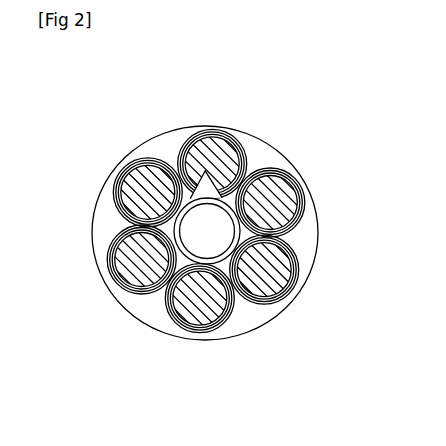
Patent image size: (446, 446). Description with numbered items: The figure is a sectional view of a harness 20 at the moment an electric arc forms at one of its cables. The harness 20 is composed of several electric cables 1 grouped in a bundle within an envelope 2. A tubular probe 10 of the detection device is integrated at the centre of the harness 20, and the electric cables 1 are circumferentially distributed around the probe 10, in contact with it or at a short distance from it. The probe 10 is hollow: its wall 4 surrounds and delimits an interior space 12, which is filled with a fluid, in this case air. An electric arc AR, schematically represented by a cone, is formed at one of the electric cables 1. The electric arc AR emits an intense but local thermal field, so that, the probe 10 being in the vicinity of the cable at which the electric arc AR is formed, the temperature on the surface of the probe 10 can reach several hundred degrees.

The electric cable 1 is at (300, 177).
The envelope 2 is at (231, 128).
The wall 4 is at (170, 288).
The tubular probe 10 is at (241, 244).
The interior space 12 is at (203, 230).
The harness 20 is at (261, 134).
The electric arc AR is at (204, 177).